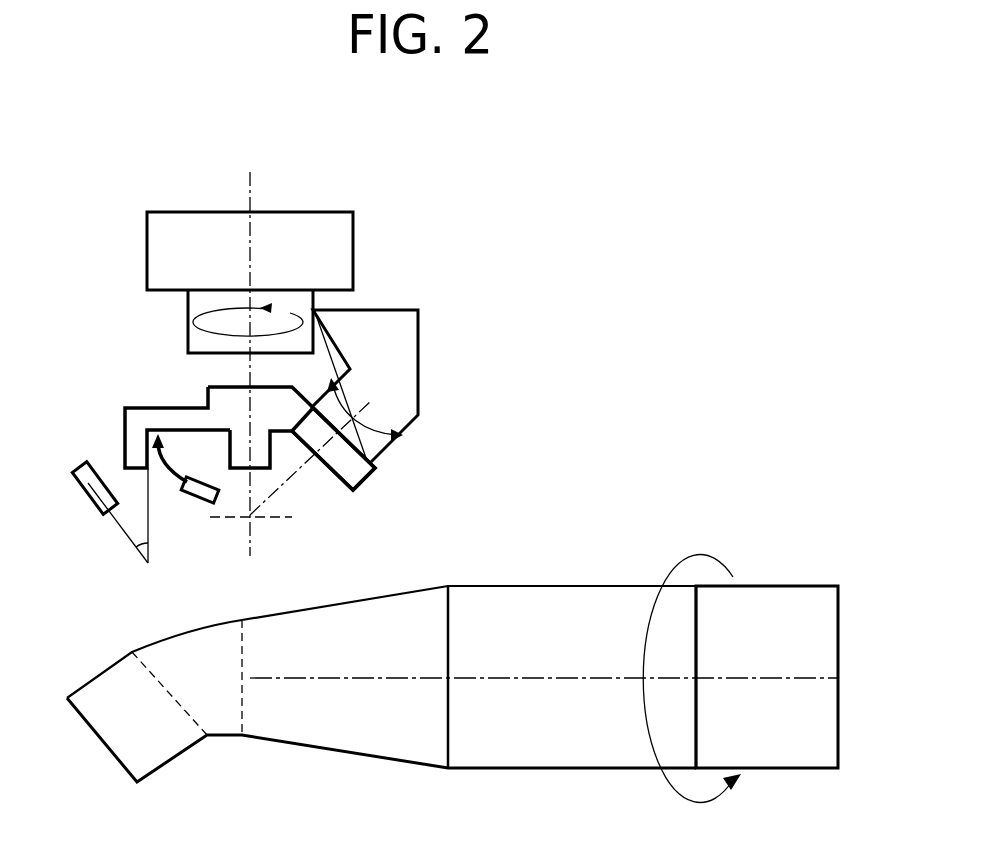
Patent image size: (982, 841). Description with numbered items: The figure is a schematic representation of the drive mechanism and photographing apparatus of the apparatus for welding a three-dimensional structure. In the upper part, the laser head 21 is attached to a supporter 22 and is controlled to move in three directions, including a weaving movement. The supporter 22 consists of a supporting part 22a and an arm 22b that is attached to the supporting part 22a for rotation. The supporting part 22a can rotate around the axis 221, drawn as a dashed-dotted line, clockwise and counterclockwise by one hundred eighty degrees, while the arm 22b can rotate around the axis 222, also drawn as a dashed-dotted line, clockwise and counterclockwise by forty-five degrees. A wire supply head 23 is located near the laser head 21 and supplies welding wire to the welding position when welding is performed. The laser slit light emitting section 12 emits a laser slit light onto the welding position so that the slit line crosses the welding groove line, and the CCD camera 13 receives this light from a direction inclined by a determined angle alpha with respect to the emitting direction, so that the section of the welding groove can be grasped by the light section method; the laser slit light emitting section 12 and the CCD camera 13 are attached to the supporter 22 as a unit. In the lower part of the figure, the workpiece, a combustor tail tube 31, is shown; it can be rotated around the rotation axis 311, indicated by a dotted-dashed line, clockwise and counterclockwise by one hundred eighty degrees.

The axis 221 is at (250, 197).
The supporter 22 is at (304, 331).
The supporting part 22a is at (340, 238).
The arm 22b is at (393, 358).
The axis 222 is at (300, 472).
The laser head 21 is at (230, 448).
The laser slit light emitting section 12 is at (127, 452).
The CCD camera 13 is at (83, 483).
The wire supply head 23 is at (197, 504).
The combustor tail tube 31 is at (490, 660).
The rotation axis 311 is at (803, 680).